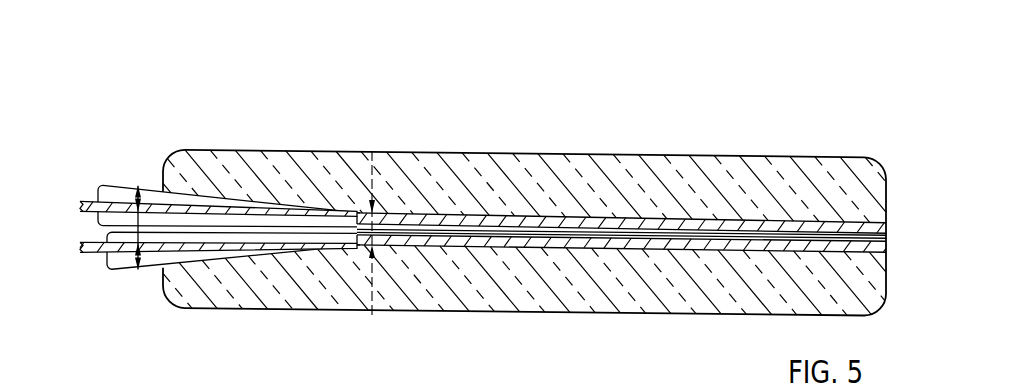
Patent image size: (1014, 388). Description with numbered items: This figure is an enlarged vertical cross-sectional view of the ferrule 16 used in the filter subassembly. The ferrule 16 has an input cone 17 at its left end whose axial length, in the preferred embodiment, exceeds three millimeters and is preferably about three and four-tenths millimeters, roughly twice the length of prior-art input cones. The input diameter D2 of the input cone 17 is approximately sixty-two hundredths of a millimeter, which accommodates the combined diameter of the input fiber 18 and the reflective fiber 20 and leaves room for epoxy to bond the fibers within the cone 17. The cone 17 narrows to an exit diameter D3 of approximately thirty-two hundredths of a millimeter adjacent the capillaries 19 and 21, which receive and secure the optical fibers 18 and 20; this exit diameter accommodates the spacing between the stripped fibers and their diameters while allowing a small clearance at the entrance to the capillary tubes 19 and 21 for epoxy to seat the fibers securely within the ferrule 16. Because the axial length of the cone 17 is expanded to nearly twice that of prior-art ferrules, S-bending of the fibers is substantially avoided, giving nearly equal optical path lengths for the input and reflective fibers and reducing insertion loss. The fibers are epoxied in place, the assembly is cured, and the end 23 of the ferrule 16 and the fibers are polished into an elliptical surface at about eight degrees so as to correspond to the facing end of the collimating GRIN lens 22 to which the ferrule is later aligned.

The ferrule 16 is at (257, 137).
The input cone 17 is at (195, 200).
The input fiber 18 is at (115, 167).
The capillary 19 is at (503, 215).
The reflective fiber 20 is at (125, 288).
The capillary 21 is at (566, 251).
The GRIN lens 22 is at (219, 382).
The end of the ferrule 23 is at (661, 141).
The input diameter D2 is at (110, 231).
The exit diameter D3 is at (364, 317).